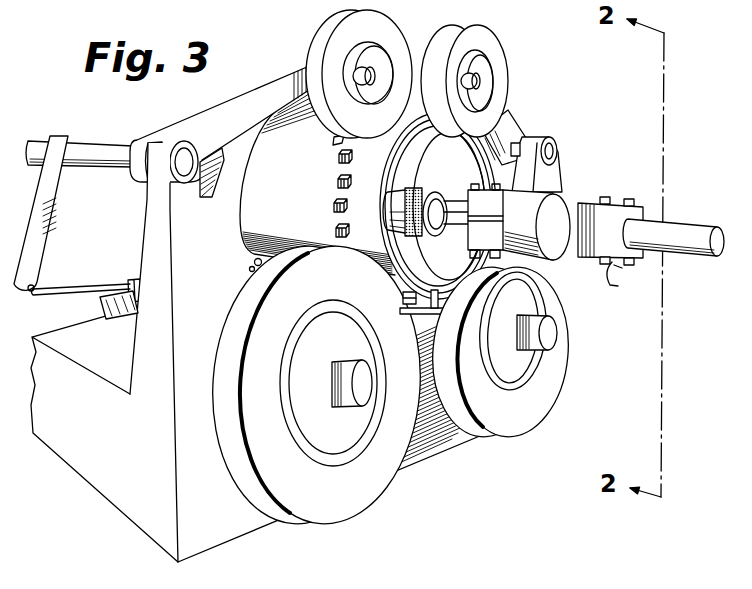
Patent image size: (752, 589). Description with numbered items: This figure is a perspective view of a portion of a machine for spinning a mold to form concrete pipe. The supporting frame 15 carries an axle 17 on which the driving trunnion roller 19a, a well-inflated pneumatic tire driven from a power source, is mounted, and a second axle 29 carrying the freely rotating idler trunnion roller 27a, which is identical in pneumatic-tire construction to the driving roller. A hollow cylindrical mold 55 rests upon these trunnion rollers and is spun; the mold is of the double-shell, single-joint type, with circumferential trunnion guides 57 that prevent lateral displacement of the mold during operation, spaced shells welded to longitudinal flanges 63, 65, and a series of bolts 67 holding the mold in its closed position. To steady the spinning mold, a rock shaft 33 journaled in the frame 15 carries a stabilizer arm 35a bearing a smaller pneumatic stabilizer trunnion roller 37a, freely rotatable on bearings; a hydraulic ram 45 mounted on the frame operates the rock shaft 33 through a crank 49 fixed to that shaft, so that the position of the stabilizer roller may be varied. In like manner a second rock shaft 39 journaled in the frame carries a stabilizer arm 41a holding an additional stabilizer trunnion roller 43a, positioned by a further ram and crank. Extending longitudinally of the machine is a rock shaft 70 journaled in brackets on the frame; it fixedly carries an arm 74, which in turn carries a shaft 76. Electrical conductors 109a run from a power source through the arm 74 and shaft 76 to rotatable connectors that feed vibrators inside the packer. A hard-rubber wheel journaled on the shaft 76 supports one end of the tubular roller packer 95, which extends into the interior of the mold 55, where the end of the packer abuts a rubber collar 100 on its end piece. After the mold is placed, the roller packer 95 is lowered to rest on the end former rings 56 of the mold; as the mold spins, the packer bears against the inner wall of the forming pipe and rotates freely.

The supporting frame 15 is at (133, 512).
The axle 17 is at (556, 331).
The trunnion roller 19a is at (529, 413).
The idler trunnion roller 27a is at (326, 503).
The axle 29 is at (100, 308).
The rock shaft 33 is at (112, 151).
The stabilizer arm 35a is at (250, 106).
The stabilizer trunnion roller 37a is at (322, 38).
The rock shaft 39 is at (519, 141).
The stabilizer arm 41a is at (503, 128).
The stabilizer trunnion roller 43a is at (489, 52).
The hydraulic ram 45 is at (134, 278).
The crank 49 is at (65, 194).
The hollow cylindrical mold 55 is at (253, 176).
The end former ring 56 is at (382, 231).
The circumferential trunnion guide 57 is at (333, 186).
The longitudinal flange 63 is at (255, 262).
The longitudinal flange 65 is at (452, 307).
The bolt 67 is at (250, 270).
The rock shaft 70 is at (686, 229).
The arm 74 is at (589, 204).
The shaft 76 is at (447, 233).
The roller packer 95 is at (395, 170).
The rubber collar 100 is at (421, 192).
The electrical conductors 109a is at (624, 266).